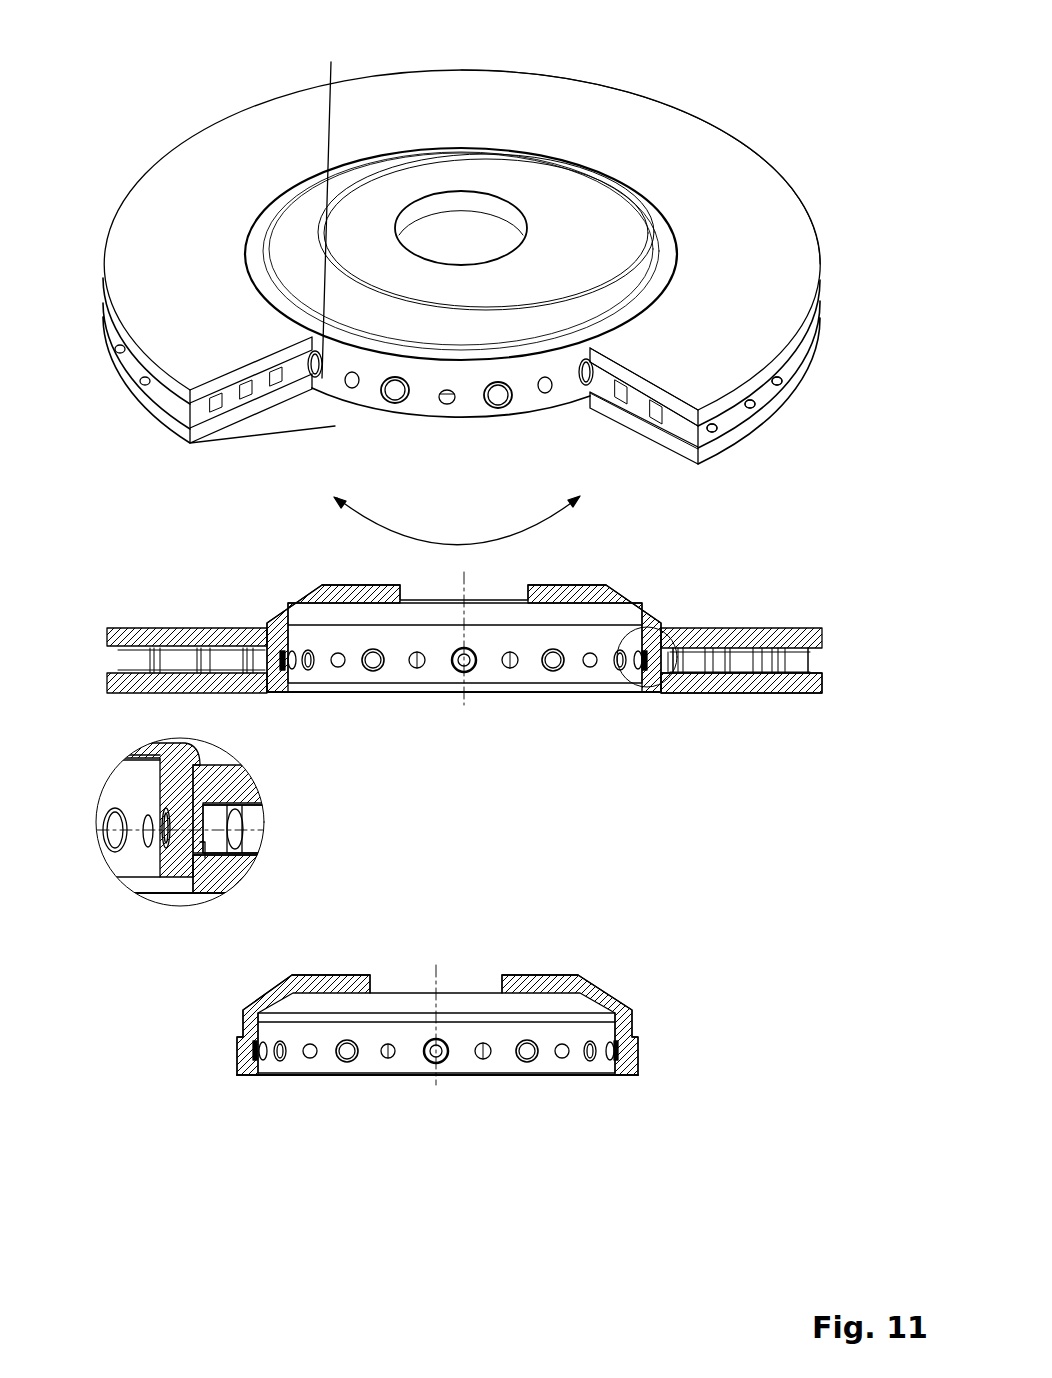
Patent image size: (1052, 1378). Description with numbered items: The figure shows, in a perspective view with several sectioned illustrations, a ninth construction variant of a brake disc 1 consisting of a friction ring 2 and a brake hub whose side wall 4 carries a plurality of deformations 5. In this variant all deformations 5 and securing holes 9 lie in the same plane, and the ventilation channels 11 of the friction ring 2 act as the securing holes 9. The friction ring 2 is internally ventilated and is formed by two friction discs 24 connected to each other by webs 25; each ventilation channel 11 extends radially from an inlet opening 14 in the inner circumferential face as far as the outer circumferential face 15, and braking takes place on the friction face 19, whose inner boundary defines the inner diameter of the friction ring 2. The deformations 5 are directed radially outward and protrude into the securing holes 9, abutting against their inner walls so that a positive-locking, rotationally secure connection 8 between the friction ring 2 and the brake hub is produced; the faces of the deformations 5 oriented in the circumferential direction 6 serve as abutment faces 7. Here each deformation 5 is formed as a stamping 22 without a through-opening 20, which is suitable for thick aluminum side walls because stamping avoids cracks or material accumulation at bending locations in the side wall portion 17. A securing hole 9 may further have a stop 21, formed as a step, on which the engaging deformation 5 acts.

The brake disc 1 is at (617, 55).
The friction ring 2 is at (793, 268).
The side wall 4 is at (416, 408).
The deformation 5 is at (190, 443).
The circumferential direction 6 is at (457, 522).
The abutment face 7 is at (329, 207).
The rotationally secure connection 8 is at (669, 641).
The securing hole 9 is at (655, 412).
The ventilation channel 11 is at (505, 615).
The inlet opening 14 is at (595, 376).
The outer circumferential face 15 is at (778, 367).
The side wall portion 17 is at (468, 405).
The friction face 19 is at (683, 137).
The through-opening 20 is at (447, 400).
The stop 21 is at (250, 863).
The stamping 22 is at (490, 378).
The friction disc 24 is at (178, 157).
The web 25 is at (145, 381).